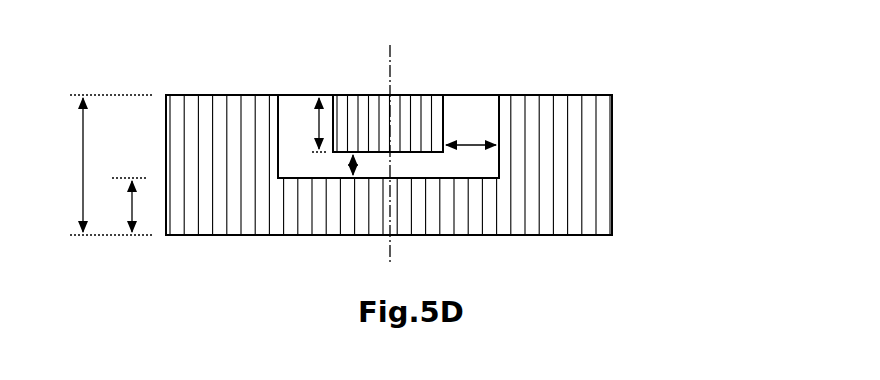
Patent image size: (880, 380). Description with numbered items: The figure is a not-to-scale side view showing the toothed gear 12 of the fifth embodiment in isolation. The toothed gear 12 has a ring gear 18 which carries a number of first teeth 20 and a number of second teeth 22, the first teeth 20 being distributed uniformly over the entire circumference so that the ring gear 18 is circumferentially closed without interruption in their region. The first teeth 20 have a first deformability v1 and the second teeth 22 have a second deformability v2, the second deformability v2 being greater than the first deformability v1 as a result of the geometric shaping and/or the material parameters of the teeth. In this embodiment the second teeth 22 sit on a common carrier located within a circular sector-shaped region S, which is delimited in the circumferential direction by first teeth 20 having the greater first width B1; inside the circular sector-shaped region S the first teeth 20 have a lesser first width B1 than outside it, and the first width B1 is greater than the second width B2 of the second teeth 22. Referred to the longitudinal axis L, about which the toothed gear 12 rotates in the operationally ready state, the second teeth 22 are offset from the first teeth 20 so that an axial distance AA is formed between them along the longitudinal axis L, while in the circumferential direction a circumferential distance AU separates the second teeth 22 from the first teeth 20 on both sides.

The toothed gear 12 is at (141, 78).
The ring gear 18 is at (459, 136).
The first teeth 20 is at (459, 165).
The second teeth 22 is at (423, 95).
The first deformability v1 is at (597, 123).
The second deformability v2 is at (422, 103).
The circular sector-shaped region S is at (296, 76).
The first width B1 is at (98, 165).
The second width B2 is at (318, 128).
The circumferential distance AU is at (470, 143).
The axial distance AA is at (358, 163).
The longitudinal axis L is at (390, 260).